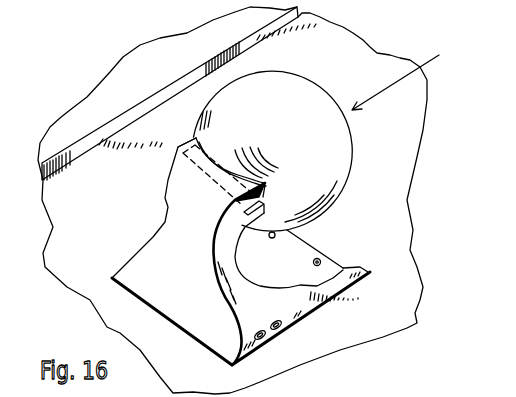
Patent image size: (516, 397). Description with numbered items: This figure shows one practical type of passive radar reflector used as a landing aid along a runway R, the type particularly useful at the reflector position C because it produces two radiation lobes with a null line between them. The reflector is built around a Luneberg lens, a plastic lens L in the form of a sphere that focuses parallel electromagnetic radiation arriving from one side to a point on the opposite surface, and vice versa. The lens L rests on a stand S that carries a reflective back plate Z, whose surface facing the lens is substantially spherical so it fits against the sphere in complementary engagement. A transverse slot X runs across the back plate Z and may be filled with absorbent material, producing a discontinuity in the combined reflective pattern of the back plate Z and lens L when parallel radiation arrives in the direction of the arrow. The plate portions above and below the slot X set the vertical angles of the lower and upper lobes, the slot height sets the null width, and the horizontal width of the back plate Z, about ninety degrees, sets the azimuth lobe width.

The runway R is at (154, 103).
The plastic lens L is at (288, 88).
The reflector position C is at (172, 214).
The back plate Z is at (266, 183).
The transverse slot X is at (262, 201).
The stand S is at (316, 298).